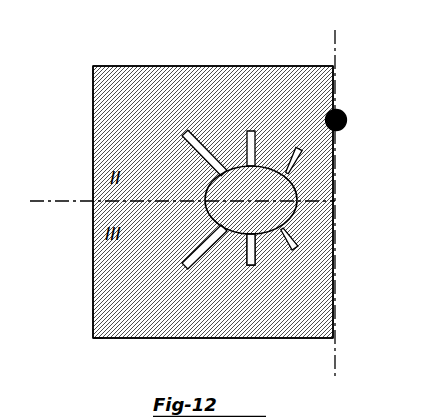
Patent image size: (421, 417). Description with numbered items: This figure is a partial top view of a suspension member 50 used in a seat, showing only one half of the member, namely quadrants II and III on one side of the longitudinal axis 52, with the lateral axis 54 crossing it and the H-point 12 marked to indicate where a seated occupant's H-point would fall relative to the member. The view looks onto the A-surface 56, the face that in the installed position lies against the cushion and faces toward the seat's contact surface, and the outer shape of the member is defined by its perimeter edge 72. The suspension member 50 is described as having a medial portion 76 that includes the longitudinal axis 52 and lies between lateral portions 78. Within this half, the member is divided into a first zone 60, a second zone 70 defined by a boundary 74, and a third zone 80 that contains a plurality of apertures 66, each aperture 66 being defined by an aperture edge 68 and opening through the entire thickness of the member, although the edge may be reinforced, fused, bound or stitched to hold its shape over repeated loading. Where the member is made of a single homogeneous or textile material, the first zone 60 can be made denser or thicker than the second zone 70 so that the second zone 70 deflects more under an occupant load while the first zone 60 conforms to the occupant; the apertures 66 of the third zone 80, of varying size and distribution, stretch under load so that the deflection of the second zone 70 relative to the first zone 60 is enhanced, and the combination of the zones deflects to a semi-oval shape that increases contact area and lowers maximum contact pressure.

The H-point 12 is at (340, 108).
The suspension member 50 is at (58, 71).
The longitudinal axis 52 is at (332, 40).
The lateral axis 54 is at (30, 196).
The A-surface 56 is at (95, 297).
The first zone 60 is at (114, 68).
The apertures 66 is at (190, 132).
The aperture edge 68 is at (184, 240).
The second zone 70 is at (285, 174).
The perimeter edge 72 is at (85, 110).
The boundary 74 is at (200, 183).
The medial portion 76 is at (286, 38).
The lateral portions 78 is at (103, 345).
The third zone 80 is at (265, 166).